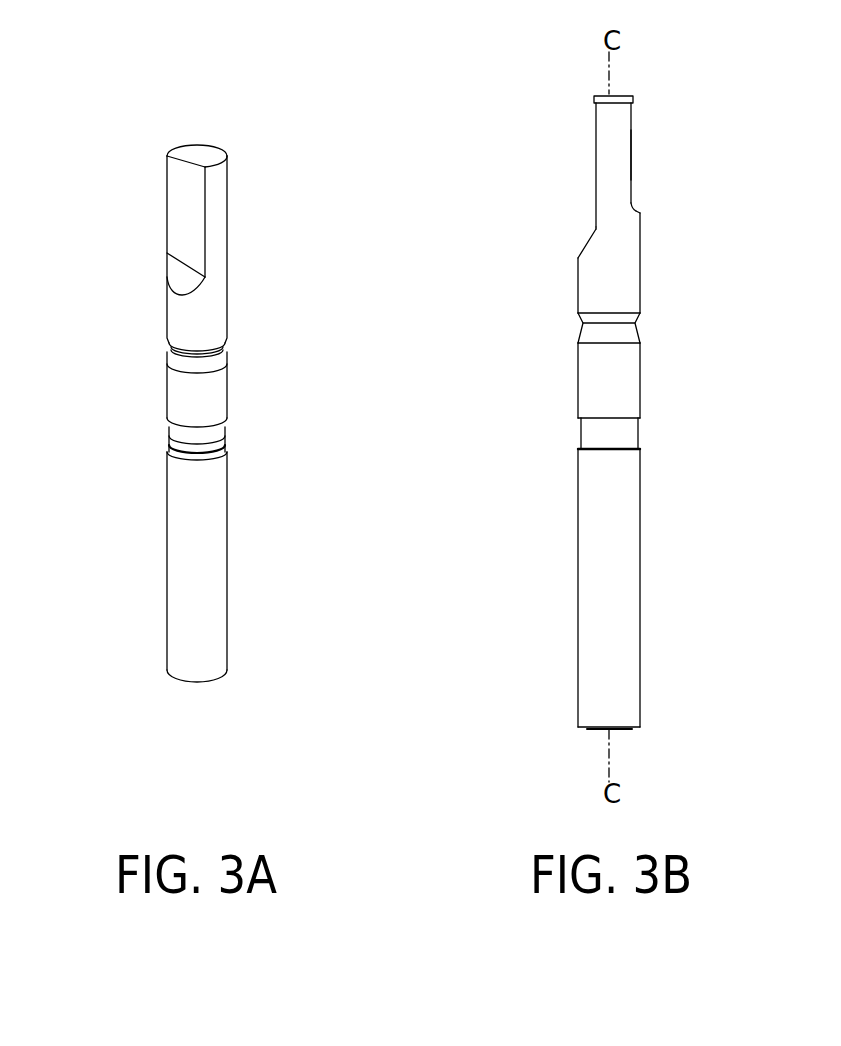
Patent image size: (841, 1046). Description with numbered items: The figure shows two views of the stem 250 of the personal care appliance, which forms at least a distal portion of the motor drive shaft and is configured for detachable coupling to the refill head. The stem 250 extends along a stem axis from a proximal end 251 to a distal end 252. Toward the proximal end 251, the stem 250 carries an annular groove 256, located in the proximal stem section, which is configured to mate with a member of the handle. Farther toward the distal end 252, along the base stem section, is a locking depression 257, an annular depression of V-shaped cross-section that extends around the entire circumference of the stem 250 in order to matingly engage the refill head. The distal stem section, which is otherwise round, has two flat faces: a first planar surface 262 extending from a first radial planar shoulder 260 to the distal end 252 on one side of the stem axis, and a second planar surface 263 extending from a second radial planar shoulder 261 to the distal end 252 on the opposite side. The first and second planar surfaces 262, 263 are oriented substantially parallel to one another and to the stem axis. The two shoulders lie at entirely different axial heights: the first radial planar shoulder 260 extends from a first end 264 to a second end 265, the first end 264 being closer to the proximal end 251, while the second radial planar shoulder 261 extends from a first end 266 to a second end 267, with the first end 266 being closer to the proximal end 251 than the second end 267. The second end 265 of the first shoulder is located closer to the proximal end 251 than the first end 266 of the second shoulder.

In FIG. 3A, the stem 250 is at (88, 183).
In FIG. 3B, the stem 250 is at (486, 127).
In FIG. 3A, the proximal end 251 is at (203, 683).
In FIG. 3B, the proximal end 251 is at (620, 731).
In FIG. 3A, the distal end 252 is at (200, 150).
In FIG. 3B, the distal end 252 is at (624, 95).
In FIG. 3A, the annular groove 256 is at (207, 445).
In FIG. 3B, the annular groove 256 is at (622, 440).
In FIG. 3A, the locking depression 257 is at (218, 356).
In FIG. 3B, the locking depression 257 is at (637, 338).
In FIG. 3A, the first radial planar shoulder 260 is at (183, 283).
In FIG. 3B, the first radial planar shoulder 260 is at (590, 238).
In FIG. 3B, the second radial planar shoulder 261 is at (636, 208).
In FIG. 3A, the first planar surface 262 is at (186, 208).
In FIG. 3B, the first planar surface 262 is at (594, 138).
In FIG. 3B, the second planar surface 263 is at (632, 140).
In FIG. 3B, the first end of the first radial planar shoulder 264 is at (577, 257).
In FIG. 3B, the second end of the first radial planar shoulder 265 is at (594, 223).
In FIG. 3B, the first end of the second radial planar shoulder 266 is at (640, 214).
In FIG. 3B, the second end of the second radial planar shoulder 267 is at (634, 203).